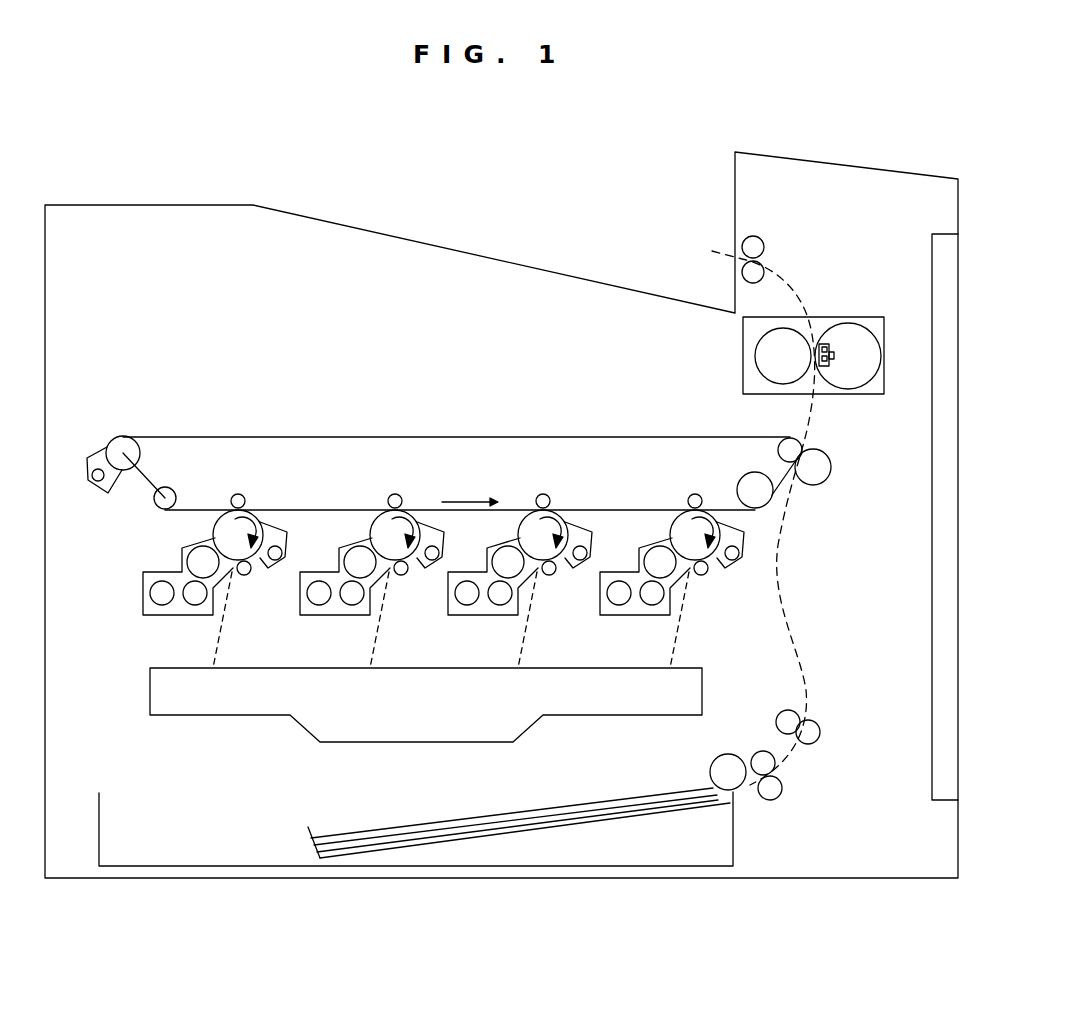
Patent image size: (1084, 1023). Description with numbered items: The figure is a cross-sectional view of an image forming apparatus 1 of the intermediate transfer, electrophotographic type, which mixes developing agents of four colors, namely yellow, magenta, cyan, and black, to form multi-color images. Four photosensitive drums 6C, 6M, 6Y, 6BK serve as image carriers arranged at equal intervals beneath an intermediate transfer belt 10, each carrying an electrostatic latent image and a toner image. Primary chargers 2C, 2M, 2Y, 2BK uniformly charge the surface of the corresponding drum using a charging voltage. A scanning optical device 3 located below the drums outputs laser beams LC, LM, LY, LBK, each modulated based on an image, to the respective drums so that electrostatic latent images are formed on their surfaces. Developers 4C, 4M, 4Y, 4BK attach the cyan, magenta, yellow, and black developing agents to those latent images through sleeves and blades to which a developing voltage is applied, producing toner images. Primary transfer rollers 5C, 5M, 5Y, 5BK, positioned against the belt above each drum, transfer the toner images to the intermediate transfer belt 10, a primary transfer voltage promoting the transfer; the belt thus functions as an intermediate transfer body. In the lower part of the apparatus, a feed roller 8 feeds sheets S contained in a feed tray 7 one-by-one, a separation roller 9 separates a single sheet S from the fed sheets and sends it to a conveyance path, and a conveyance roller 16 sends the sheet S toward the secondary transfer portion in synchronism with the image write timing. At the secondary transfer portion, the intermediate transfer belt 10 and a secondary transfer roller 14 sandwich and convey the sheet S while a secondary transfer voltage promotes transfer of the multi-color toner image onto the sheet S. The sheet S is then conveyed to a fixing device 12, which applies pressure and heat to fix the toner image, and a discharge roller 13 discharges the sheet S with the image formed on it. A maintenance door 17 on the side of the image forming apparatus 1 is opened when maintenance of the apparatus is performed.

The image forming apparatus 1 is at (760, 166).
The primary charger 2C is at (250, 577).
The primary charger 2M is at (406, 567).
The primary charger 2Y is at (551, 567).
The primary charger 2BK is at (712, 567).
The scanning optical device 3 is at (420, 737).
The developer 4C is at (183, 555).
The developer 4M is at (345, 563).
The developer 4Y is at (493, 563).
The developer 4BK is at (643, 563).
The primary transfer roller 5C is at (241, 494).
The primary transfer roller 5M is at (411, 476).
The primary transfer roller 5Y is at (556, 476).
The primary transfer roller 5BK is at (719, 476).
The photosensitive drum 6C is at (213, 509).
The photosensitive drum 6M is at (395, 515).
The photosensitive drum 6Y is at (543, 515).
The photosensitive drum 6BK is at (690, 515).
The laser beam LC is at (220, 637).
The laser beam LM is at (348, 620).
The laser beam LY is at (496, 620).
The laser beam LBK is at (640, 620).
The feed tray 7 is at (170, 866).
The feed roller 8 is at (711, 762).
The separation roller 9 is at (760, 752).
The intermediate transfer belt 10 is at (508, 437).
The fixing device 12 is at (743, 365).
The discharge roller 13 is at (765, 243).
The secondary transfer roller 14 is at (830, 482).
The conveyance roller 16 is at (818, 741).
The maintenance door 17 is at (932, 265).
The sheet S is at (572, 800).